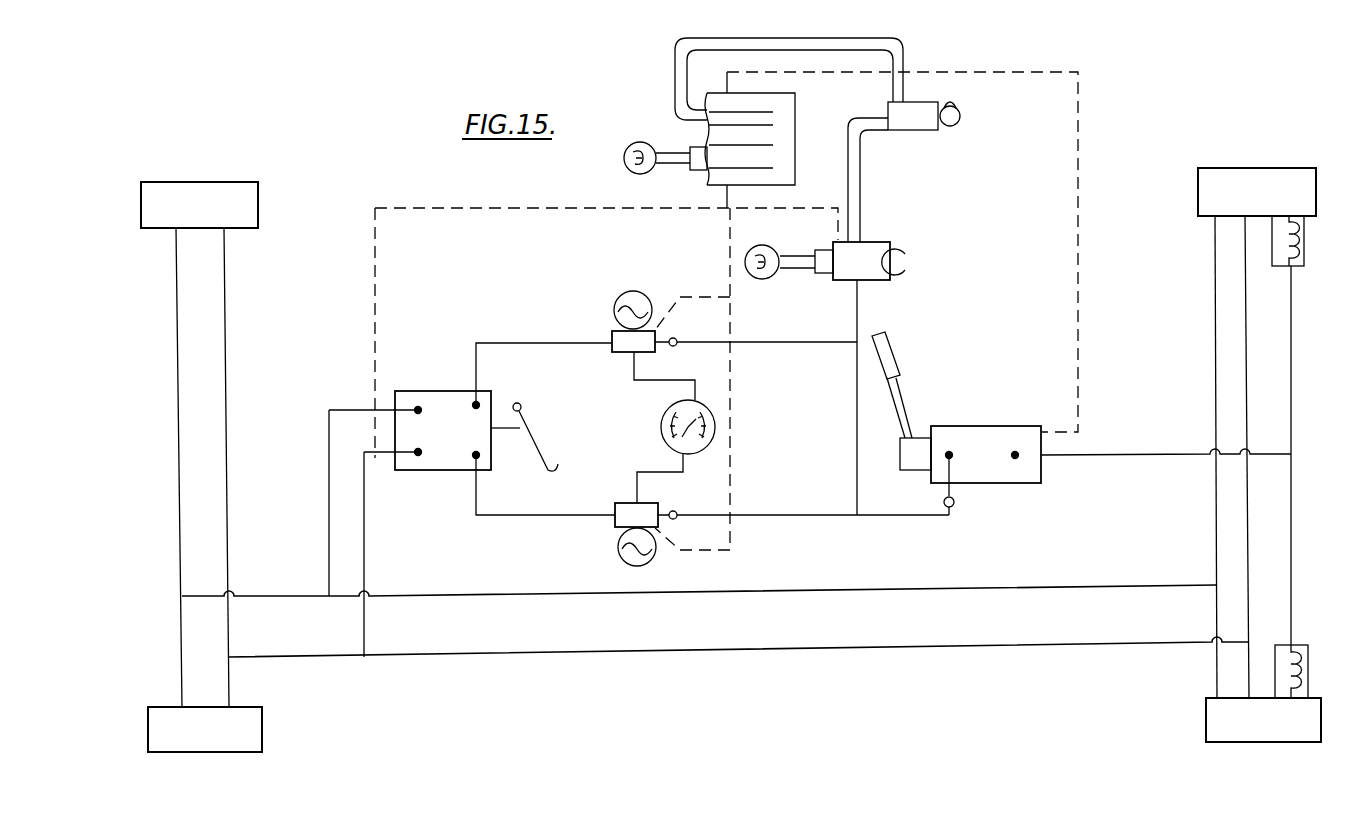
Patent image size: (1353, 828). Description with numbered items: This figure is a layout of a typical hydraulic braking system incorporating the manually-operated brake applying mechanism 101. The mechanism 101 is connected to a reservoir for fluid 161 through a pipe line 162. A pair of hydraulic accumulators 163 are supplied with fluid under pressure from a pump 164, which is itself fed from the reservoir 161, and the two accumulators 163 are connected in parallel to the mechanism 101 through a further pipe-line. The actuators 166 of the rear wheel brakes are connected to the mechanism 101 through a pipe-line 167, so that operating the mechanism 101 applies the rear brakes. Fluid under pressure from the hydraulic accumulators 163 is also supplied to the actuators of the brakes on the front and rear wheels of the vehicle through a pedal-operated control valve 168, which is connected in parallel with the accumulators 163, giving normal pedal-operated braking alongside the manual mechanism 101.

The brake applying mechanism 101 is at (997, 478).
The reservoir for fluid 161 is at (783, 172).
The pipe line 162 is at (1088, 286).
The hydraulic accumulators 163 is at (622, 347).
The pump 164 is at (880, 248).
The actuators of the rear wheel brakes 166 is at (1272, 226).
The pipe-line 167 is at (1121, 457).
The pedal-operated control valve 168 is at (443, 452).